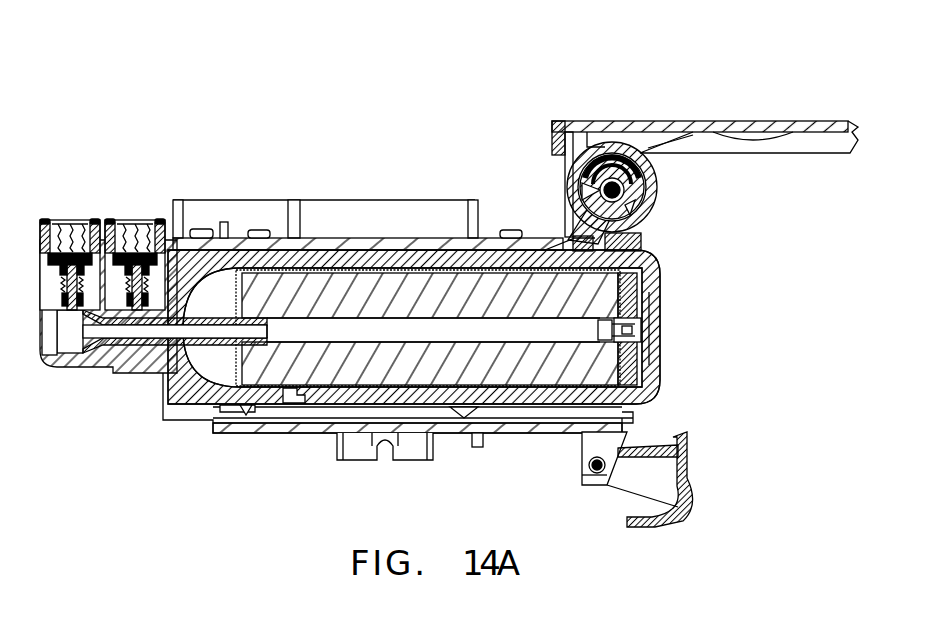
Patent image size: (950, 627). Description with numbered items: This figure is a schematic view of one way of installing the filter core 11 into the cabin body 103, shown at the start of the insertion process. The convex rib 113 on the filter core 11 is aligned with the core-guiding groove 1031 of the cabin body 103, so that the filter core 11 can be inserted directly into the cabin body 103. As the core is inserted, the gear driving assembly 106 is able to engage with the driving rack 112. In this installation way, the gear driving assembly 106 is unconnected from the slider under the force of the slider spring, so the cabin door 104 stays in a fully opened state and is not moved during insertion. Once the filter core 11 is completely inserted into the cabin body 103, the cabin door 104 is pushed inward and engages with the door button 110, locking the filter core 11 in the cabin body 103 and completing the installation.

The filter core 11 is at (325, 257).
The cabin door 104 is at (700, 147).
The gear driving assembly 106 is at (657, 190).
The driving rack 112 is at (613, 243).
The door button 110 is at (672, 485).
The cabin body 103 is at (493, 425).
The core-guiding groove 1031 is at (306, 405).
The convex rib 113 is at (245, 413).